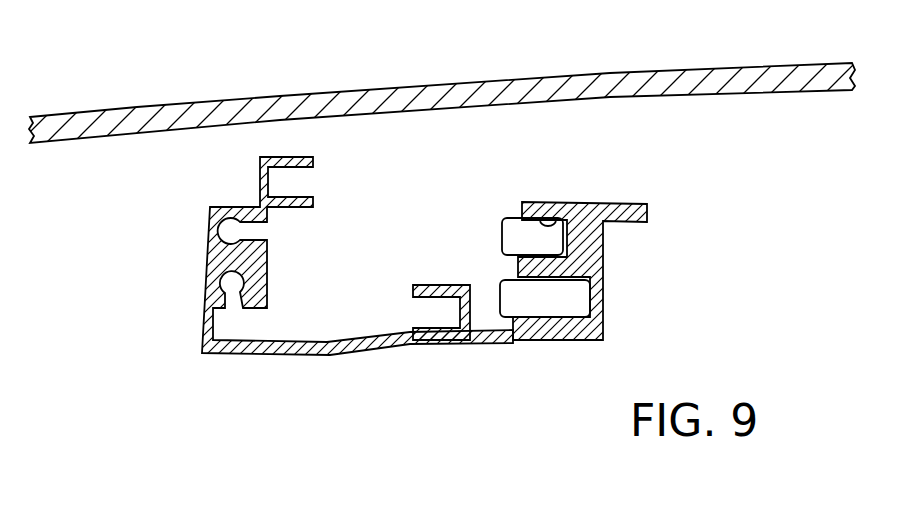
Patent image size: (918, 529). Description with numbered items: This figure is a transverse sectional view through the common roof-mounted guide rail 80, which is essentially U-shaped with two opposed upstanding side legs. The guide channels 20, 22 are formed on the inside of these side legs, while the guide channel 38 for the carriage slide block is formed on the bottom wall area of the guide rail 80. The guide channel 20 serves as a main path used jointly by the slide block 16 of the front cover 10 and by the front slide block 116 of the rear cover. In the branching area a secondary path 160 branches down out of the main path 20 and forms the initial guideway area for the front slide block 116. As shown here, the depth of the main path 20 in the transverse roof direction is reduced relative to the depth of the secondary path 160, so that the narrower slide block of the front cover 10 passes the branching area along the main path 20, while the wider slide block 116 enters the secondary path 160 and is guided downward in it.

The front cover 10 is at (133, 118).
The guide channel 22 is at (292, 180).
The front slide block 16 is at (517, 236).
The guide channel 20 is at (547, 217).
The secondary path 160 is at (603, 243).
The guide rail 80 is at (357, 235).
The guide channel 38 is at (442, 312).
The front slide block 116 is at (513, 302).